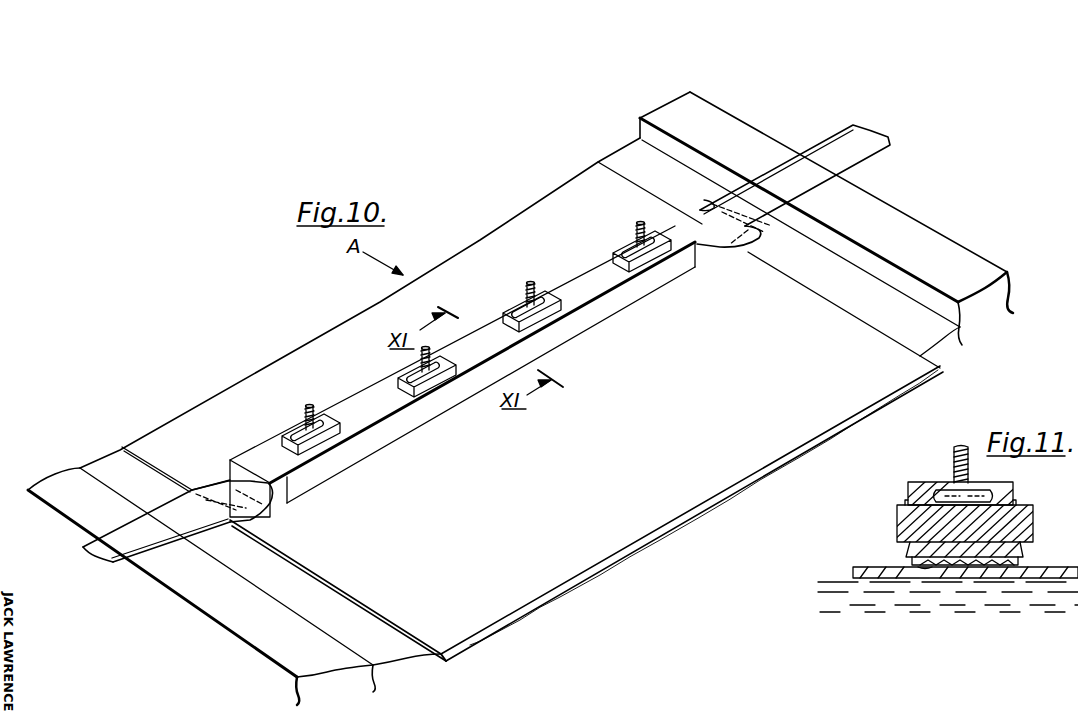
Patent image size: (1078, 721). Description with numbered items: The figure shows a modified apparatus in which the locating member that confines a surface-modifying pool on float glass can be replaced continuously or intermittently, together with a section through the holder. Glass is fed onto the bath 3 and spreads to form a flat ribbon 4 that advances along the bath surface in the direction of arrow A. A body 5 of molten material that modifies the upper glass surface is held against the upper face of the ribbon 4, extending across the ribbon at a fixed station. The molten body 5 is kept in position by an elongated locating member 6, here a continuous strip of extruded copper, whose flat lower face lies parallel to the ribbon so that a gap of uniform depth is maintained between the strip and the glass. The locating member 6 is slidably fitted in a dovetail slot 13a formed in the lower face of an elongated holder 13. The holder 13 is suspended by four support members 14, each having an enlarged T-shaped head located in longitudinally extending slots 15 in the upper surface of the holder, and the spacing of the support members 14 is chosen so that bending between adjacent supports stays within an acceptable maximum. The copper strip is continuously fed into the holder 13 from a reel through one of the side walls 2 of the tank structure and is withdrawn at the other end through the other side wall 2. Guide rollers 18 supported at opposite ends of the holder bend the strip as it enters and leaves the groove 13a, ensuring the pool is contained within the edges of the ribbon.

In FIG. 10, the side wall 2 is at (236, 625).
In FIG. 10, the bath 3 is at (280, 590).
In FIG. 11, the bath 3 is at (948, 589).
In FIG. 10, the ribbon 4 is at (586, 411).
In FIG. 11, the body of molten material 5 is at (920, 569).
In FIG. 10, the locating member 6 is at (157, 534).
In FIG. 11, the locating member 6 is at (1006, 548).
In FIG. 11, the holder 13 is at (904, 514).
In FIG. 11, the dovetail slot 13a is at (906, 550).
In FIG. 10, the support member 14 is at (310, 408).
In FIG. 11, the support member 14 is at (954, 468).
In FIG. 10, the slot 15 is at (438, 356).
In FIG. 10, the guide roller 18 is at (193, 489).